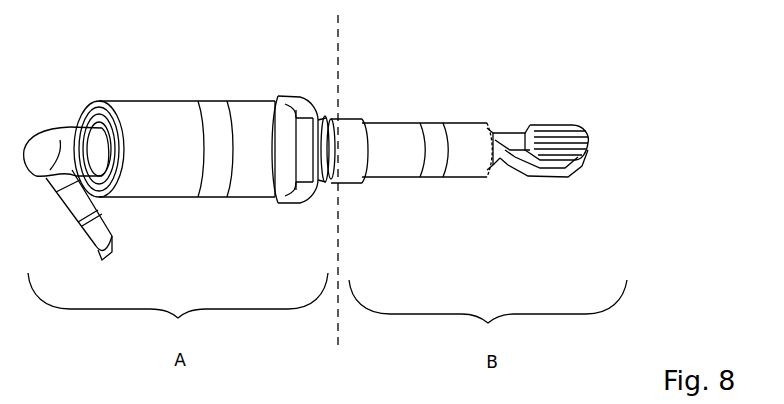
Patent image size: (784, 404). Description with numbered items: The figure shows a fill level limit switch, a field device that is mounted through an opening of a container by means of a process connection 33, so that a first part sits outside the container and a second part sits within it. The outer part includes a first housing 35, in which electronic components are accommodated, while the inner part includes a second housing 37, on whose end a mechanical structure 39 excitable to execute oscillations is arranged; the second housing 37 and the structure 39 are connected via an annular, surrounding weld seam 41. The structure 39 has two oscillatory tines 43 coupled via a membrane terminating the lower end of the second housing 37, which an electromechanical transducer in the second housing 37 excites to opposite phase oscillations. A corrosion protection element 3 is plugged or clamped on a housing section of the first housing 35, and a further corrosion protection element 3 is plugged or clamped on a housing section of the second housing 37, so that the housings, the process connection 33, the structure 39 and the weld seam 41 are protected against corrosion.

The corrosion protection element 3 is at (214, 183).
The process connection 33 is at (329, 177).
The first housing 35 is at (256, 112).
The second housing 37 is at (459, 122).
The mechanical structure 39 is at (513, 125).
The weld seam 41 is at (483, 163).
The oscillatory tines 43 is at (565, 133).